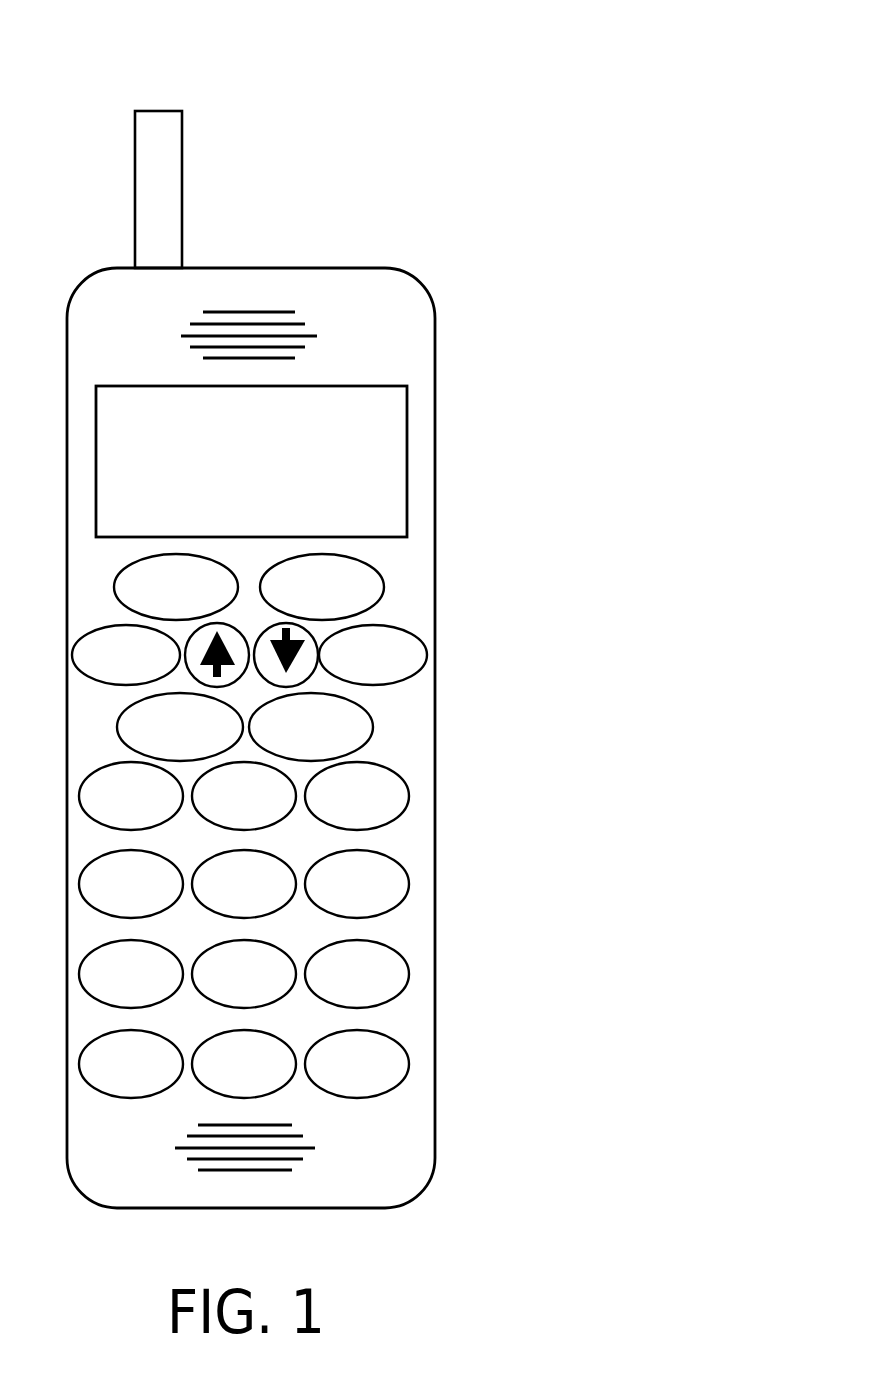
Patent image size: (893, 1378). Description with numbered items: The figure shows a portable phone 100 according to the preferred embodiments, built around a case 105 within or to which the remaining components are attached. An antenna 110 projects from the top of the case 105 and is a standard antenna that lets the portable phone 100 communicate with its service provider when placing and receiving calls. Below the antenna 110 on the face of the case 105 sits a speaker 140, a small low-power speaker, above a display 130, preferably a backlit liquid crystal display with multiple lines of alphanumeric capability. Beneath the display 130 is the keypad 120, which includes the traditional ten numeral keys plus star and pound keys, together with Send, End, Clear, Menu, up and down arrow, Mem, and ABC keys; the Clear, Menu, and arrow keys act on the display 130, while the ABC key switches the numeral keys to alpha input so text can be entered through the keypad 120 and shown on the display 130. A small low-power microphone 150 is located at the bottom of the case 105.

The portable phone 100 is at (718, 133).
The case 105 is at (435, 548).
The antenna 110 is at (182, 222).
The keypad 120 is at (338, 827).
The display 130 is at (406, 437).
The speaker 140 is at (317, 323).
The microphone 150 is at (310, 1159).